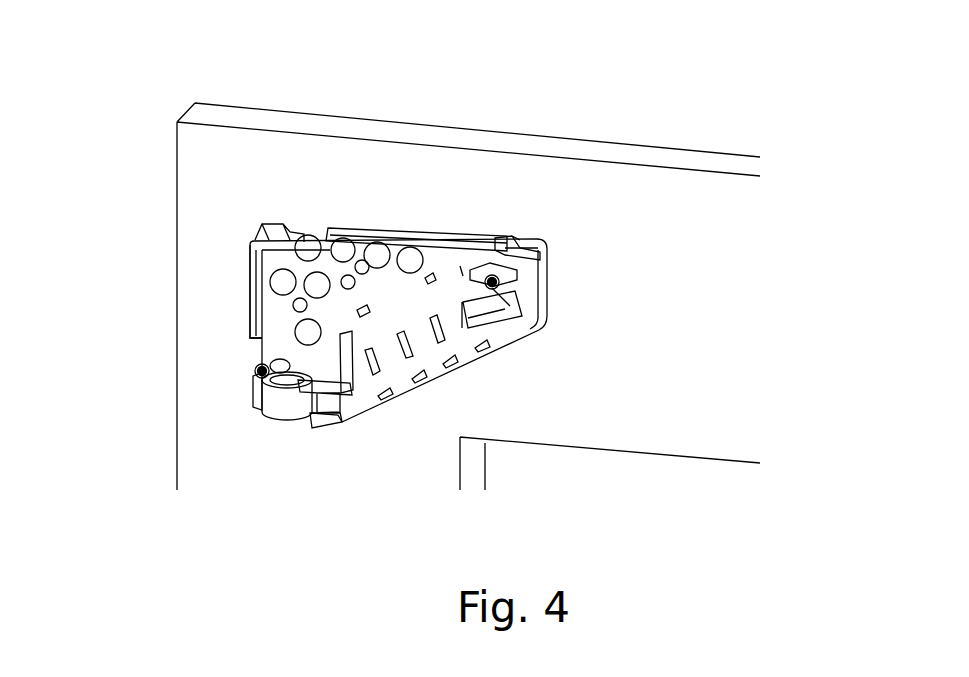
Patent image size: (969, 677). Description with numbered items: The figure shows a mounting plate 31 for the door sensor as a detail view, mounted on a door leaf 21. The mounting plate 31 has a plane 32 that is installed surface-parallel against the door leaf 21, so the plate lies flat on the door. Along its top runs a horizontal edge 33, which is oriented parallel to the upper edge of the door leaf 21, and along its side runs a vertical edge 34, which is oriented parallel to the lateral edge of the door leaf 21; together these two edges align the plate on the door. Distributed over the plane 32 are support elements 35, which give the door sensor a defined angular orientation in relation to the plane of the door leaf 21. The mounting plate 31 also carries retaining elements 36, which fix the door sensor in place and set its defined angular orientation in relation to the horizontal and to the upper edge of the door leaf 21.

The door leaf 21 is at (683, 323).
The mounting plate 31 is at (429, 98).
The plane 32 is at (385, 285).
The horizontal edge 33 is at (343, 225).
The vertical edge 34 is at (243, 273).
The support elements 35 is at (380, 370).
The retaining elements 36 is at (262, 371).